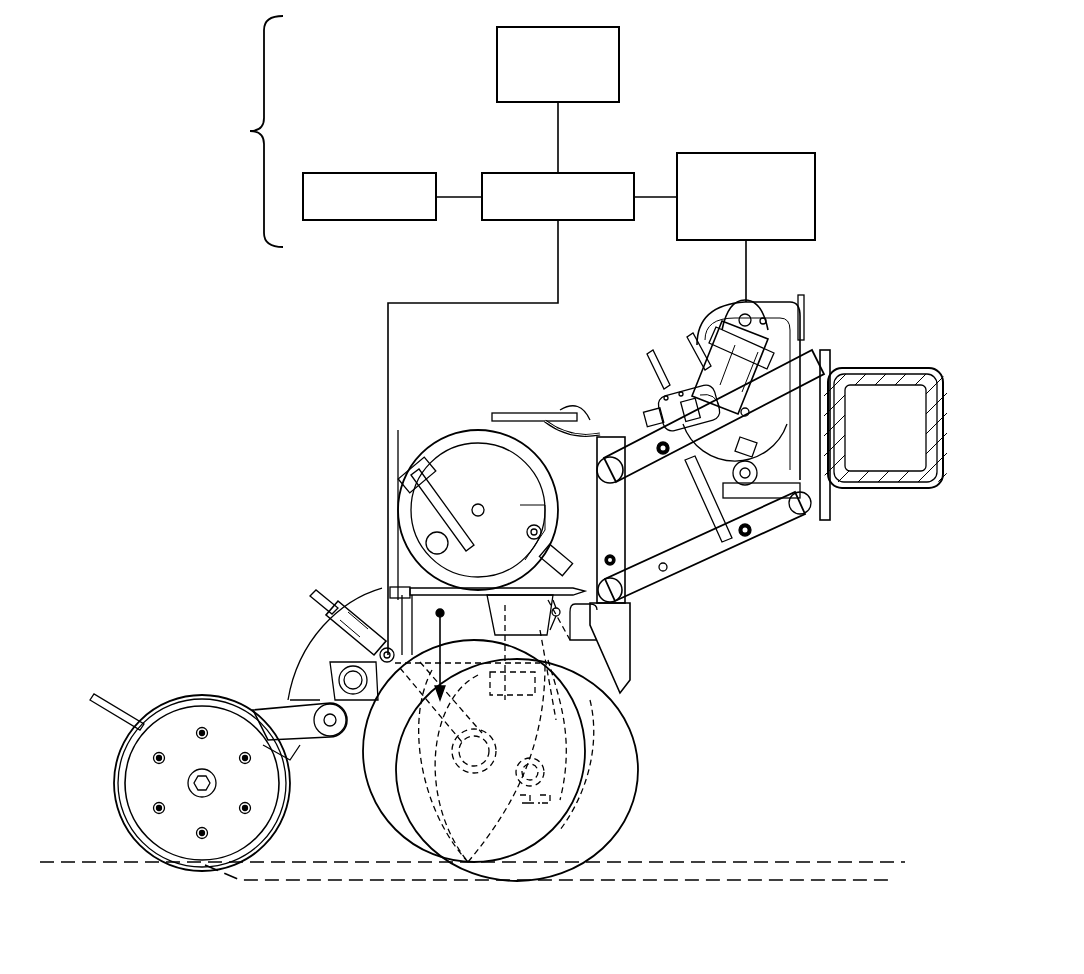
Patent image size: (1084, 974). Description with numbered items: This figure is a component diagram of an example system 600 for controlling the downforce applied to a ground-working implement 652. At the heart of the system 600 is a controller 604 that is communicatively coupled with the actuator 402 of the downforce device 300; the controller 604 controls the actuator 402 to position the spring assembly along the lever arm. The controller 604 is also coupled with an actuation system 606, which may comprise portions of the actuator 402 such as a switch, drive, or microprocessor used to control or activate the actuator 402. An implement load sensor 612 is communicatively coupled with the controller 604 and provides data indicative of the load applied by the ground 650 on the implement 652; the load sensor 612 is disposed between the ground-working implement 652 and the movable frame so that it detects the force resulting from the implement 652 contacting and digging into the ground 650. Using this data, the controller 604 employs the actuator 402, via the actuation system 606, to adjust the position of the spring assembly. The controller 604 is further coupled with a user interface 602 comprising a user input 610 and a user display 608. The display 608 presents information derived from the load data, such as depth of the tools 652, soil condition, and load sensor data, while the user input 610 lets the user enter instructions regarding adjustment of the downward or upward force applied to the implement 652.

The system 600 is at (100, 195).
The user interface 602 is at (250, 131).
The controller 604 is at (523, 173).
The actuation system 606 is at (740, 153).
The user display 608 is at (619, 66).
The user input 610 is at (370, 173).
The device for downforce application 300 is at (792, 290).
The actuator 402 is at (630, 385).
The ground 650 is at (914, 344).
The ground-working implement 652 is at (280, 644).
The implement load sensor 612 is at (370, 625).